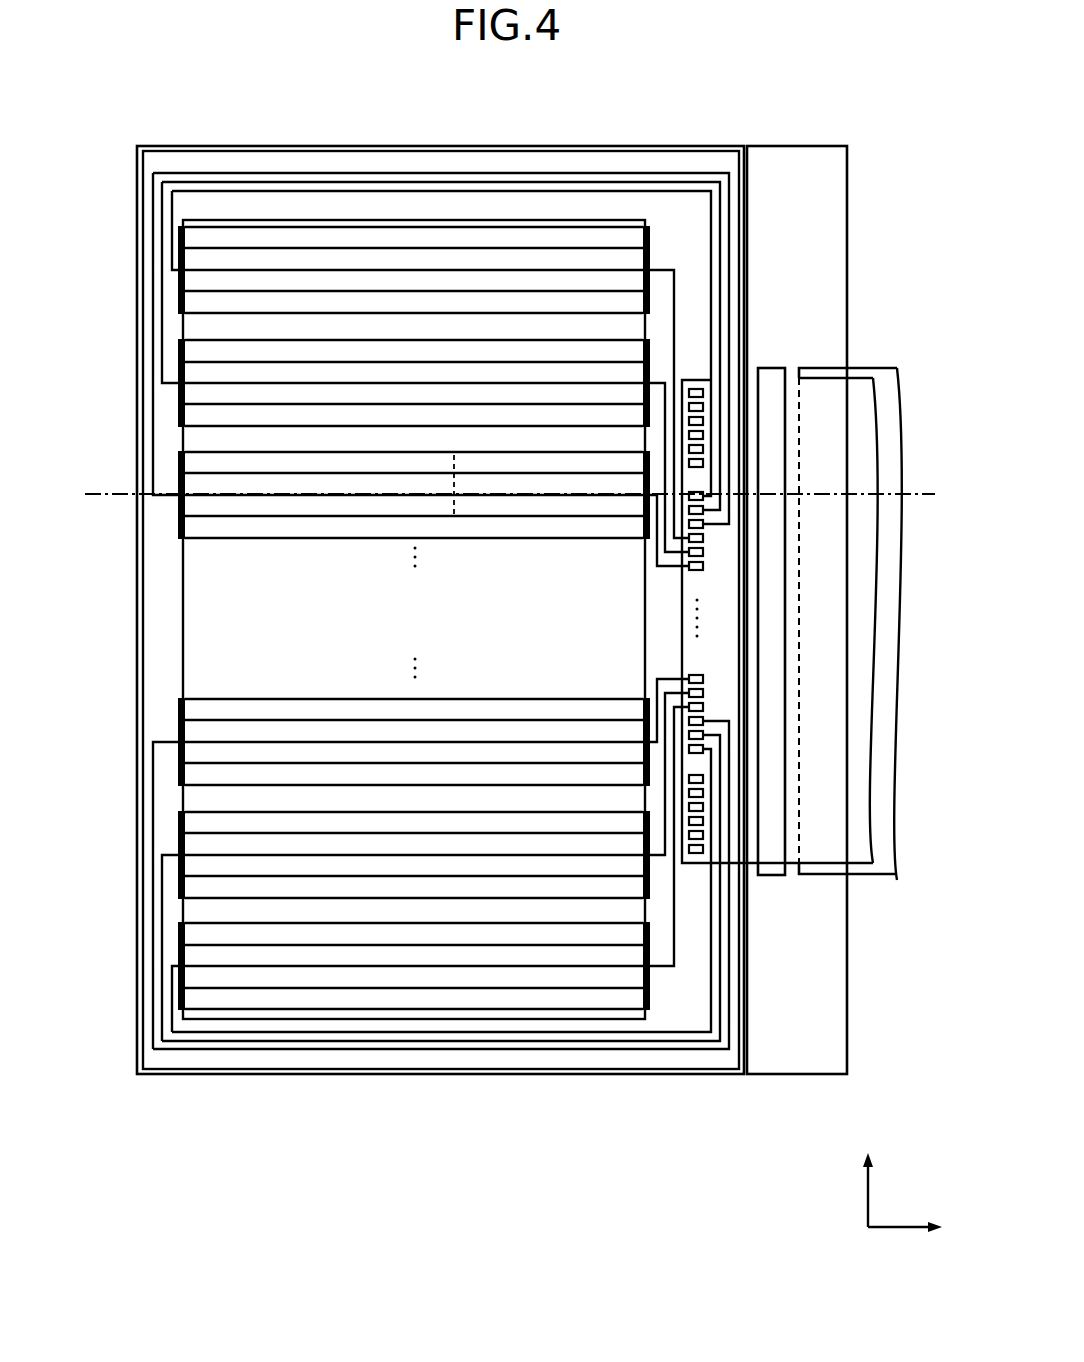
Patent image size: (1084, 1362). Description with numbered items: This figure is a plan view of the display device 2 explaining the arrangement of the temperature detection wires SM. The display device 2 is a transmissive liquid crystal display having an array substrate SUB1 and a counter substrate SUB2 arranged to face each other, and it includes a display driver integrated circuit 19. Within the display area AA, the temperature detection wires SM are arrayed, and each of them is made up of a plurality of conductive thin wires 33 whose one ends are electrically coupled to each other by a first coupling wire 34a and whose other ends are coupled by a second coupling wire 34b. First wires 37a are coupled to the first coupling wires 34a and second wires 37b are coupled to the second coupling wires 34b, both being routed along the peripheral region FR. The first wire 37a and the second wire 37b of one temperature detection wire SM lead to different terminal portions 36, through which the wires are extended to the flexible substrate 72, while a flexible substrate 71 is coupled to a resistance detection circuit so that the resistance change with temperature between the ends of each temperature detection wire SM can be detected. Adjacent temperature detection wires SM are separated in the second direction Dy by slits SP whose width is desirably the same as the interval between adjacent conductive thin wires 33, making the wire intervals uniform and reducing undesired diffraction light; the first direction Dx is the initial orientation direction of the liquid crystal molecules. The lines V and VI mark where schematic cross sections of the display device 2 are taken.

The display device 2 is at (492, 621).
The display driver integrated circuit 19 is at (772, 395).
The conductive thin wires 33 is at (580, 312).
The first coupling wire 34a is at (178, 243).
The second coupling wire 34b is at (650, 253).
The terminal portions 36 is at (697, 492).
The first wires 37a is at (172, 261).
The second wires 37b is at (675, 298).
The flexible substrate 71 is at (858, 853).
The flexible substrate 72 is at (858, 610).
The display area AA is at (288, 209).
The peripheral region FR is at (410, 161).
The temperature detection wires SM is at (614, 203).
The slits SP is at (205, 912).
The array substrate SUB1 is at (790, 1088).
The counter substrate SUB2 is at (209, 1086).
The line V-V' V is at (932, 532).
The line VI-VI' VI is at (502, 510).
The first direction Dx is at (908, 1228).
The second direction Dy is at (868, 1200).